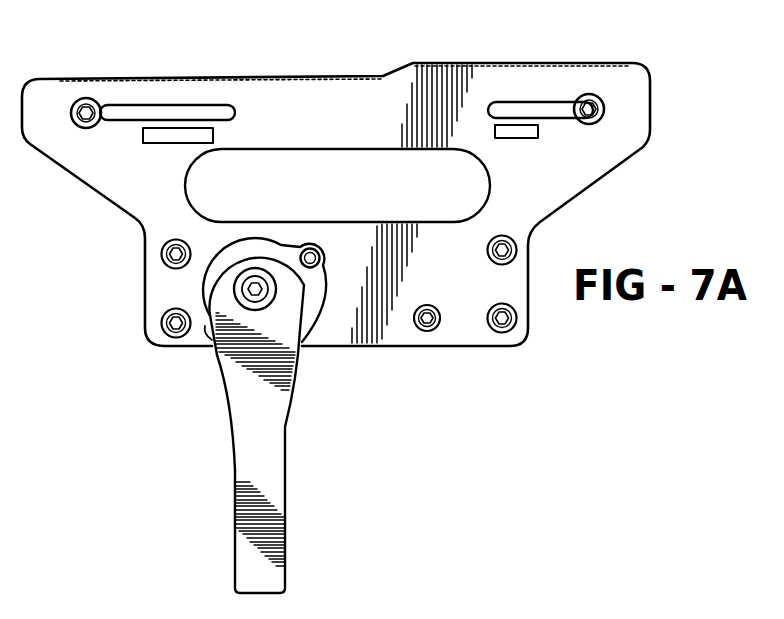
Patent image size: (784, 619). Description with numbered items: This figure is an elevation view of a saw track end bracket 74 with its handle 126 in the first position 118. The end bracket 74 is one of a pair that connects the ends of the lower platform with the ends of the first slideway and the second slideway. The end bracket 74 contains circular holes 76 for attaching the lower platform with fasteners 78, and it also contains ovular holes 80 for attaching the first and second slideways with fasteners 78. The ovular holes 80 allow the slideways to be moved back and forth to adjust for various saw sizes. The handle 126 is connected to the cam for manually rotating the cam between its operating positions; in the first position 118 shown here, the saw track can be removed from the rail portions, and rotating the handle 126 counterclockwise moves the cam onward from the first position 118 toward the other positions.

The end bracket 74 is at (653, 106).
The circular hole 76 is at (438, 326).
The fastener 78 is at (86, 99).
The ovular hole 80 is at (210, 106).
The first position 118 is at (293, 441).
The handle 126 is at (284, 517).